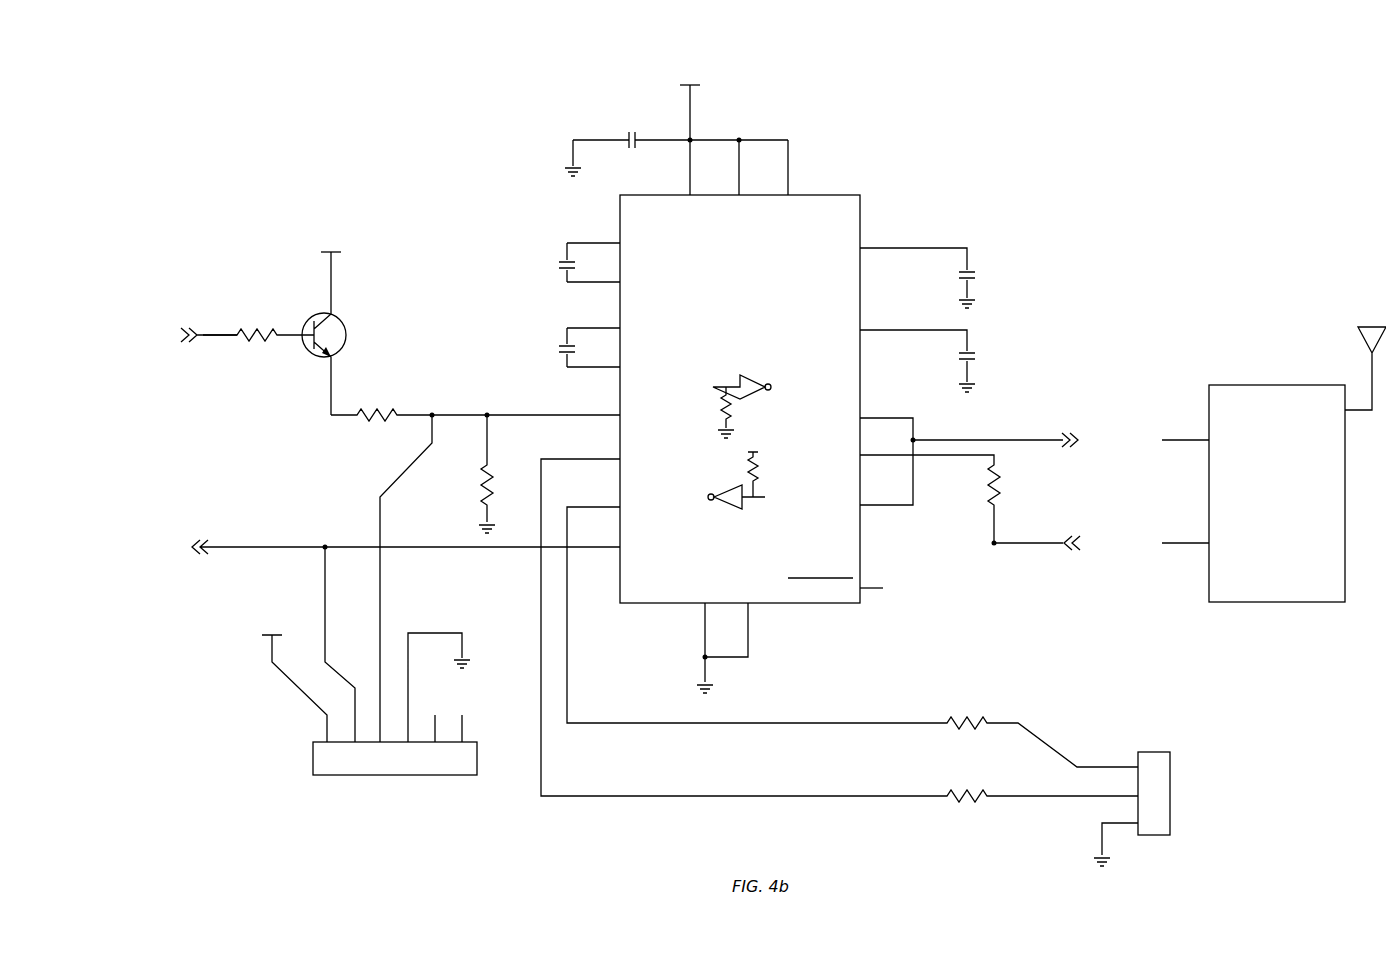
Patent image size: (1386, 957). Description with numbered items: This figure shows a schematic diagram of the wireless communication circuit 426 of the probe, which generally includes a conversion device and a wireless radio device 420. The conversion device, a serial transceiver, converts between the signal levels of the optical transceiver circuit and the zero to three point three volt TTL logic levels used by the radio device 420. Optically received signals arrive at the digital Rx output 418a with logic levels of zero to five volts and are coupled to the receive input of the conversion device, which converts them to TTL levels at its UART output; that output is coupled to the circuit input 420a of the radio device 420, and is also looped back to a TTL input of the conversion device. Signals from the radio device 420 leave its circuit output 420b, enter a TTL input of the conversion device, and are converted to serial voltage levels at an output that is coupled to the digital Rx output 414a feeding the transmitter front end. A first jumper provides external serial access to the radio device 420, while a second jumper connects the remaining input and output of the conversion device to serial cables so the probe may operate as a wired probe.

The wireless communication circuit 426 is at (1180, 137).
The digital Rx output 418a is at (215, 334).
The digital Rx output 414a is at (219, 546).
The circuit input 420a is at (1207, 439).
The circuit output 420b is at (1207, 542).
The wireless radio device 420 is at (1297, 464).